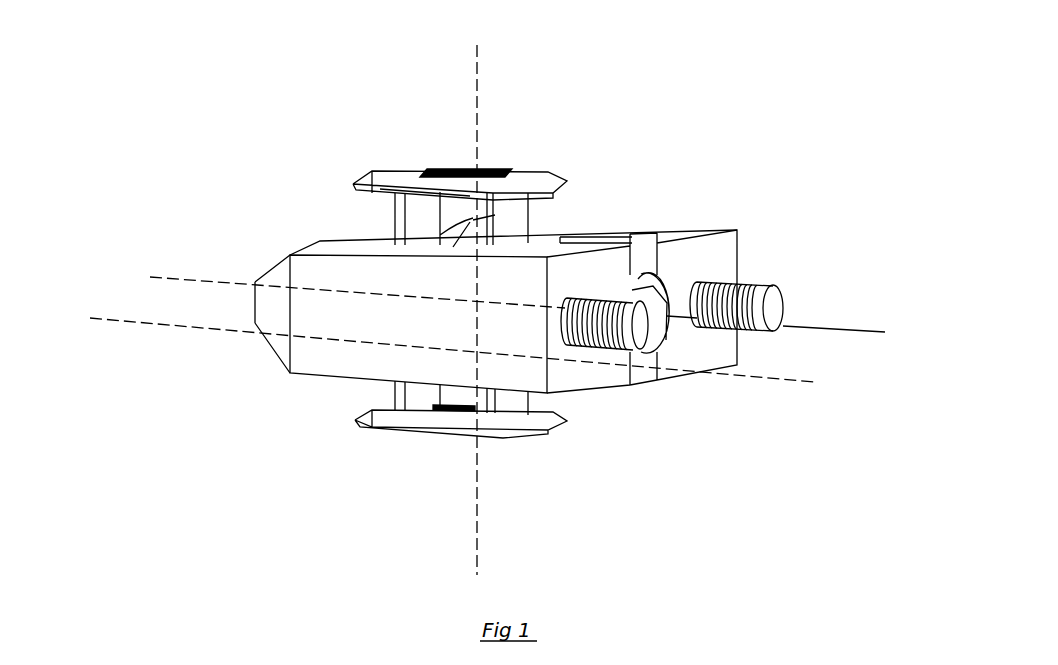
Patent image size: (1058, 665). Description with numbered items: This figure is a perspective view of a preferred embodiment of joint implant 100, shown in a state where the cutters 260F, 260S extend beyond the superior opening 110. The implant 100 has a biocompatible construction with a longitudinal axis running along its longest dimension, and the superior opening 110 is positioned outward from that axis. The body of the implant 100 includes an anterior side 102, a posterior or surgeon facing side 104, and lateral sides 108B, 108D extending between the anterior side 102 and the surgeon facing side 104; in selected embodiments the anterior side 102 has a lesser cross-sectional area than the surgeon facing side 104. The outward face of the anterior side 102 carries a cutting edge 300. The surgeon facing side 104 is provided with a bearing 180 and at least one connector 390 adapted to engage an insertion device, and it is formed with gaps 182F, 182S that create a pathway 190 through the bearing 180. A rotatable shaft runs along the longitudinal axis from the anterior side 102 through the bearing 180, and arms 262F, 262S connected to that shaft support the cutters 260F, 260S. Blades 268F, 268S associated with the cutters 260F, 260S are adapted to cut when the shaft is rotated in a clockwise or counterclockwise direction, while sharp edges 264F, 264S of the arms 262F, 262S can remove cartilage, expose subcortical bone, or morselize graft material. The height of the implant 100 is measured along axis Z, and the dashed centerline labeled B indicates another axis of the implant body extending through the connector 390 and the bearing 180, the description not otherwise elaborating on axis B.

The implant 100 is at (502, 278).
The anterior side 102 is at (463, 300).
The surgeon facing side 104 is at (755, 365).
The lateral side 108B is at (366, 324).
The lateral side 108D is at (548, 185).
The superior opening 110 is at (665, 193).
The bearing 180 is at (737, 381).
The gap 182F is at (722, 207).
The gap 182S is at (737, 442).
The pathway 190 is at (724, 289).
The cutter 260F is at (447, 121).
The arm 262F is at (501, 166).
The sharp edge 264F is at (501, 150).
The blade 268F is at (433, 125).
The cutter 260S is at (461, 491).
The arm 262S is at (488, 470).
The sharp edge 264S is at (432, 488).
The blade 268S is at (484, 472).
The cutting edge 300 is at (229, 279).
The connector 390 is at (732, 305).
The axis B is at (453, 351).
The axis Z- Z is at (477, 307).